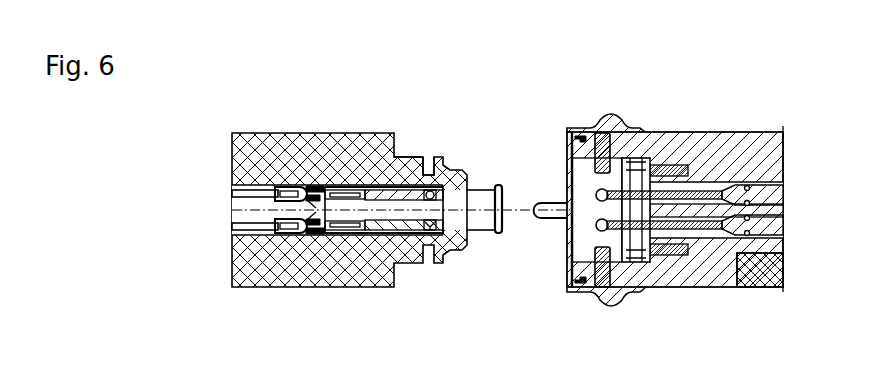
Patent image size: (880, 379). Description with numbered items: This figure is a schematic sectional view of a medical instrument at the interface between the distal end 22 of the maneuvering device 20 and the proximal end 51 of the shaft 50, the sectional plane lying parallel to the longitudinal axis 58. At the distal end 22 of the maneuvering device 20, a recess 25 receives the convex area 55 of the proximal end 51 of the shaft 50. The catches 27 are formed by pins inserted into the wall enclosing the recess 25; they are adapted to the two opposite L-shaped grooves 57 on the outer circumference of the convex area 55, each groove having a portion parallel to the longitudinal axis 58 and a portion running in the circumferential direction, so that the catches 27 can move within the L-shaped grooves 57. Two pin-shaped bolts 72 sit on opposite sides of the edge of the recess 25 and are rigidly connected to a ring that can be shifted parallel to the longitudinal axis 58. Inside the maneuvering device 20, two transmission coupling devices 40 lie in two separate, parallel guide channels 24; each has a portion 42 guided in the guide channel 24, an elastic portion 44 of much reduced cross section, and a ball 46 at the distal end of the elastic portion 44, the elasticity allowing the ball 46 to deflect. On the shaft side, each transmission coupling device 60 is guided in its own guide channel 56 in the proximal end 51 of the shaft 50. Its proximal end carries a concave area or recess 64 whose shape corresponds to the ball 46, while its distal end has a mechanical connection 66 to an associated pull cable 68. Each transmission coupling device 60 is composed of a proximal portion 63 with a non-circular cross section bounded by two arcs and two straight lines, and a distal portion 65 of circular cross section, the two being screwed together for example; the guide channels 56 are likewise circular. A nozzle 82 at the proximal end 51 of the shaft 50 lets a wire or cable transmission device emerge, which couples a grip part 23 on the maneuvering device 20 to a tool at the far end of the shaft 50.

The maneuvering device 20 is at (647, 202).
The distal end of the maneuvering device 22 is at (647, 202).
The grip part 23 is at (620, 115).
The guide channel 24 is at (705, 238).
The recess 25 is at (573, 243).
The catch 27 is at (598, 254).
The transmission coupling device 40 is at (762, 238).
The portion guided in the guide channel 42 is at (760, 270).
The elastic portion 44 is at (657, 228).
The ball 46 is at (608, 229).
The shaft 50 is at (348, 203).
The proximal end of the shaft 51 is at (474, 141).
The convex area 55 is at (412, 157).
The guide channel 56 is at (260, 187).
The L-shaped groove 57 is at (428, 158).
The longitudinal axis 58 is at (515, 212).
The transmission coupling device 60 is at (402, 233).
The proximal portion 63 is at (366, 235).
The recess 64 is at (433, 231).
The distal portion 65 is at (303, 235).
The mechanical connection 66 is at (284, 233).
The pull cable 68 is at (252, 236).
The bolt 72 is at (543, 204).
The nozzle 82 is at (490, 190).